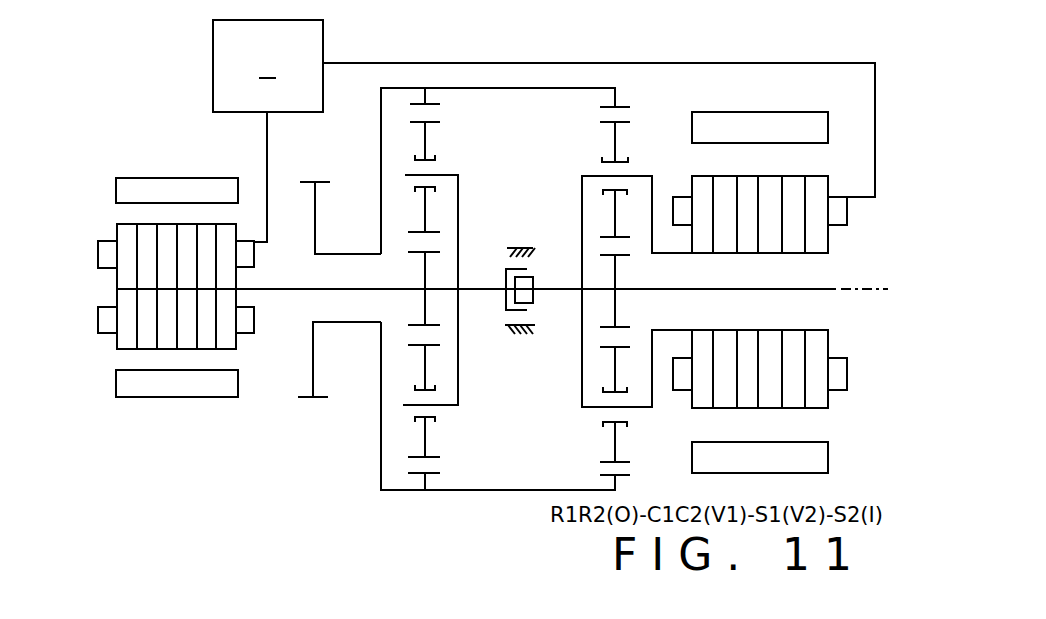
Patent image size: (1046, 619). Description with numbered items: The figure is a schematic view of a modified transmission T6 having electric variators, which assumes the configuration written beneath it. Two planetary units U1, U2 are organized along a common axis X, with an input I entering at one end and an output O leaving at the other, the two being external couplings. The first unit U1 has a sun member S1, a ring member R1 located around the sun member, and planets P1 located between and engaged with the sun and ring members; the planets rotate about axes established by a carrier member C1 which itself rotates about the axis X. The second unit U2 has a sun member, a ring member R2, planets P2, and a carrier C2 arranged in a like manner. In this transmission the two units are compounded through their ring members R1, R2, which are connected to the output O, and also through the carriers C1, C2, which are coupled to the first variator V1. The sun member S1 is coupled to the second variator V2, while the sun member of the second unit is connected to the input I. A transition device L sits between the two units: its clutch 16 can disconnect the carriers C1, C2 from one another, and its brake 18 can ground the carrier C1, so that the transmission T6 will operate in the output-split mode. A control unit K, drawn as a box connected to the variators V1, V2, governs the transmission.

The transmission T6 is at (170, 122).
The control unit K is at (544, 131).
The variator V1 is at (843, 256).
The variator V2 is at (99, 344).
The ring member R1 is at (436, 104).
The ring member R2 is at (624, 107).
The planets P1 is at (427, 142).
The planets P2 is at (615, 143).
The carrier member C1 is at (460, 206).
The carrier C2 is at (582, 223).
The sun member S1 is at (424, 276).
The transition device L is at (498, 260).
The common axis X is at (858, 288).
The input I is at (776, 292).
The output O is at (305, 398).
The planetary unit U1 is at (410, 504).
The planetary unit U2 is at (521, 504).
The clutch 16 is at (528, 311).
The brake 18 is at (508, 311).